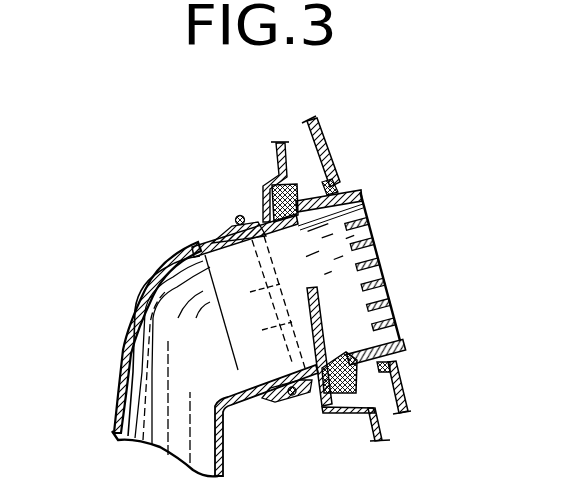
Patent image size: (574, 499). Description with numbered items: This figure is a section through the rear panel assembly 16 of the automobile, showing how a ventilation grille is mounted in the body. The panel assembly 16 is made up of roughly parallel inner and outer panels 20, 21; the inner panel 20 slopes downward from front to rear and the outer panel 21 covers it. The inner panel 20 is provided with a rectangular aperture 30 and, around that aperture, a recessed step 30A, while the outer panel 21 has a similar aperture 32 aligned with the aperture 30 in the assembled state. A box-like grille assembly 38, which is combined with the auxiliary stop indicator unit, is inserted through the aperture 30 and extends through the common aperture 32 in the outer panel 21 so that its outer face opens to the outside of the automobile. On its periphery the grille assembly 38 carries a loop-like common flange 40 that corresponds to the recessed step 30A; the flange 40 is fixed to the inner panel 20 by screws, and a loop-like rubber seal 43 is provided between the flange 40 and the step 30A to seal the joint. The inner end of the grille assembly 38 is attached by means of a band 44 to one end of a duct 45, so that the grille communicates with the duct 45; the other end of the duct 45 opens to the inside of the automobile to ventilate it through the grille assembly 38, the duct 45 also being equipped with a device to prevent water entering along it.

The panel assembly 16 is at (333, 143).
The inner panel 20 is at (265, 188).
The outer panel 21 is at (304, 125).
The rectangular aperture 30 is at (267, 213).
The recessed step 30A is at (358, 408).
The aperture 32 is at (345, 188).
The grille assembly 38 is at (378, 255).
The common flange 40 is at (350, 396).
The rubber seal 43 is at (331, 414).
The band 44 is at (290, 393).
The duct 45 is at (123, 317).